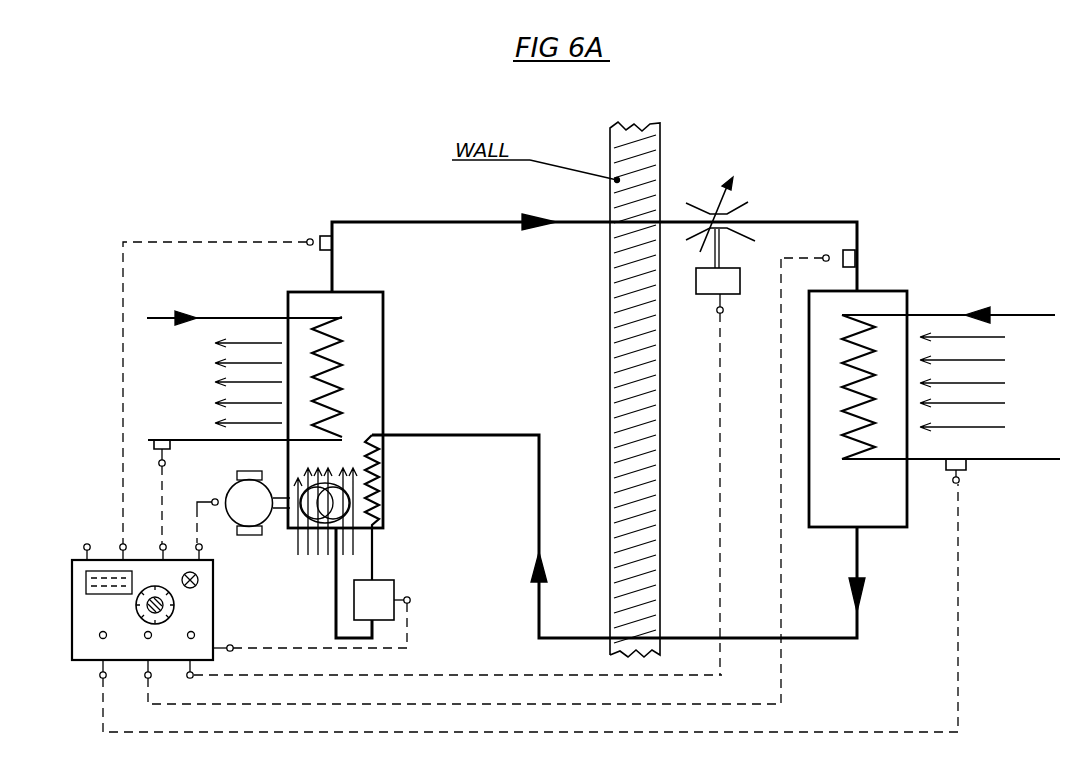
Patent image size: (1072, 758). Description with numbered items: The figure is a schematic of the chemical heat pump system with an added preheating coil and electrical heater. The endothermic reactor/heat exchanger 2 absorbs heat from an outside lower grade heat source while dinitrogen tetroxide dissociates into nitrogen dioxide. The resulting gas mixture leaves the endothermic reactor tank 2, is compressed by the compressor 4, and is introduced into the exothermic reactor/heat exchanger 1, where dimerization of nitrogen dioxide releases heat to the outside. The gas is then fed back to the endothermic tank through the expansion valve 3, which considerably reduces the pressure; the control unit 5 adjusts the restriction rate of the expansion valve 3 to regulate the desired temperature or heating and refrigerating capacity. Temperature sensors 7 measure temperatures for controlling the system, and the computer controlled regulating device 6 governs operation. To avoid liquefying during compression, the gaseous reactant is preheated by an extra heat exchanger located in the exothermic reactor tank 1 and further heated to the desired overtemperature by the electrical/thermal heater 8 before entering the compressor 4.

The exothermic reactor/heat exchanger 1 is at (265, 441).
The endothermic reactor/heat exchanger 2 is at (934, 409).
The expansion valve 3 is at (720, 212).
The compressor 4 is at (243, 510).
The control unit 5 is at (718, 452).
The computer controlled regulating device 6 is at (502, 495).
The temperature sensors 7 is at (552, 387).
The electrical/thermal heater 8 is at (311, 615).